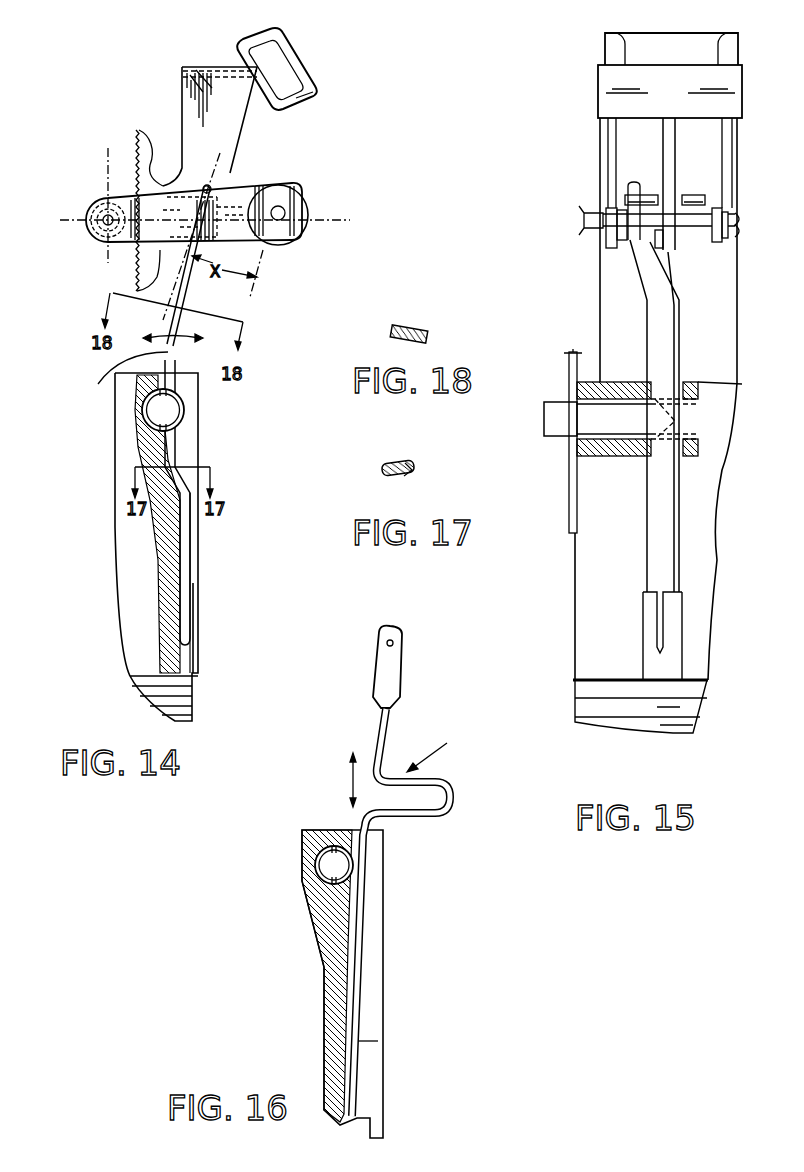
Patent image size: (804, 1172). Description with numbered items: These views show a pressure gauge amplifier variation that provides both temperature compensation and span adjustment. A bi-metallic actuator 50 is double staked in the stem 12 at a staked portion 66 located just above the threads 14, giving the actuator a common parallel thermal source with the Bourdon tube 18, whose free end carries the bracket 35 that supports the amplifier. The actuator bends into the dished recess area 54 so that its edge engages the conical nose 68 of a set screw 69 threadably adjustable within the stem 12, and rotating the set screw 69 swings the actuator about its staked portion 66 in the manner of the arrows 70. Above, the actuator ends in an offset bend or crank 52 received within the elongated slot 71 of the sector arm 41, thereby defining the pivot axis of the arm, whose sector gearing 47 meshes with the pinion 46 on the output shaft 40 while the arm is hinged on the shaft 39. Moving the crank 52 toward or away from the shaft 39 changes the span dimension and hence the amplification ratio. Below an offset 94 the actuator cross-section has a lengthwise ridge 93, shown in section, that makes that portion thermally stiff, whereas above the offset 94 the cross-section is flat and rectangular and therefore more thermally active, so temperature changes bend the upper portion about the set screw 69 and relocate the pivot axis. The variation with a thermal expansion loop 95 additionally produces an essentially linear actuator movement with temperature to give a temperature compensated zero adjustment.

In FIG. 14, the stem 12 is at (142, 586).
In FIG. 16, the stem 12 is at (333, 950).
In FIG. 15, the stem 12 is at (592, 578).
In FIG. 15, the threads 14 is at (613, 708).
In FIG. 14, the Bourdon tube 18 is at (277, 53).
In FIG. 15, the Bourdon tube 18 is at (681, 59).
In FIG. 14, the bracket 35 is at (312, 97).
In FIG. 15, the bracket 35 is at (681, 105).
In FIG. 14, the shaft 39 is at (298, 208).
In FIG. 14, the shaft 40 is at (92, 210).
In FIG. 15, the shaft 40 is at (585, 233).
In FIG. 14, the sector arm 41 is at (205, 97).
In FIG. 15, the sector arm 41 is at (663, 135).
In FIG. 15, the pinion 46 is at (678, 250).
In FIG. 14, the sector gearing 47 is at (127, 150).
In FIG. 14, the actuator 50 is at (173, 442).
In FIG. 18, the actuator 50 is at (407, 323).
In FIG. 17, the actuator 50 is at (383, 471).
In FIG. 16, the actuator 50 is at (372, 738).
In FIG. 15, the actuator 50 is at (658, 532).
In FIG. 14, the crank 52 is at (213, 188).
In FIG. 16, the crank 52 is at (393, 643).
In FIG. 15, the crank 52 is at (693, 203).
In FIG. 14, the dished recess area 54 is at (188, 455).
In FIG. 14, the staked portion 66 is at (195, 613).
In FIG. 15, the staked portion 66 is at (650, 620).
In FIG. 15, the conical nose 68 is at (638, 453).
In FIG. 14, the set screw 69 is at (165, 413).
In FIG. 16, the set screw 69 is at (333, 866).
In FIG. 15, the set screw 69 is at (562, 421).
In FIG. 14, the arrows 70 is at (163, 331).
In FIG. 14, the slot 71 is at (279, 207).
In FIG. 17, the lengthwise ridge 93 is at (402, 462).
In FIG. 14, the offset 94 is at (123, 374).
In FIG. 16, the thermal expansion loop 95 is at (477, 750).